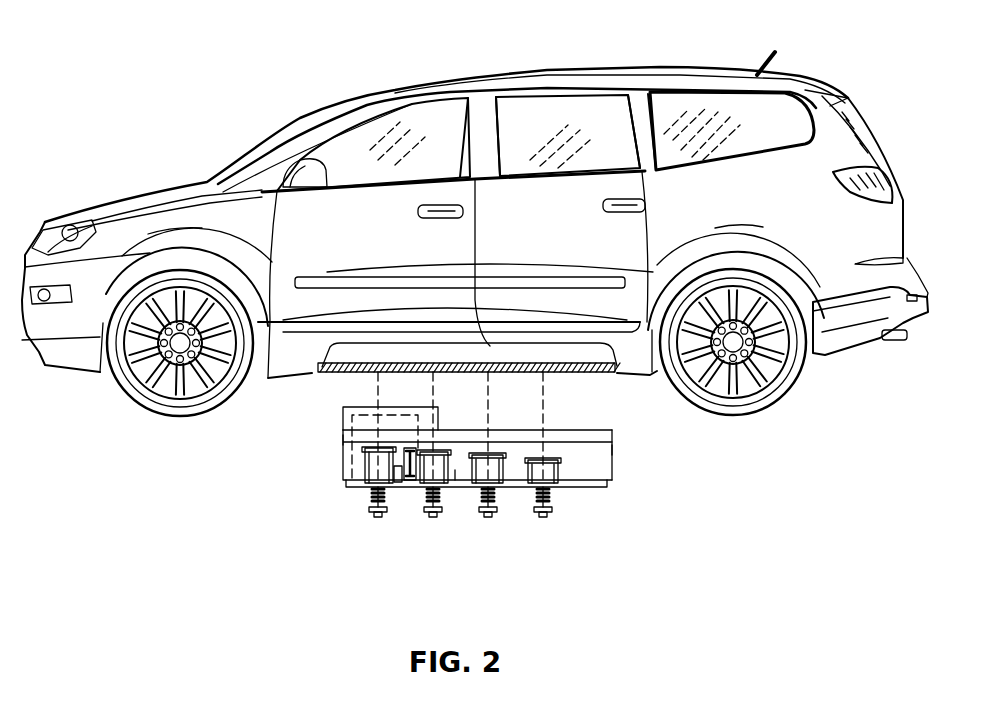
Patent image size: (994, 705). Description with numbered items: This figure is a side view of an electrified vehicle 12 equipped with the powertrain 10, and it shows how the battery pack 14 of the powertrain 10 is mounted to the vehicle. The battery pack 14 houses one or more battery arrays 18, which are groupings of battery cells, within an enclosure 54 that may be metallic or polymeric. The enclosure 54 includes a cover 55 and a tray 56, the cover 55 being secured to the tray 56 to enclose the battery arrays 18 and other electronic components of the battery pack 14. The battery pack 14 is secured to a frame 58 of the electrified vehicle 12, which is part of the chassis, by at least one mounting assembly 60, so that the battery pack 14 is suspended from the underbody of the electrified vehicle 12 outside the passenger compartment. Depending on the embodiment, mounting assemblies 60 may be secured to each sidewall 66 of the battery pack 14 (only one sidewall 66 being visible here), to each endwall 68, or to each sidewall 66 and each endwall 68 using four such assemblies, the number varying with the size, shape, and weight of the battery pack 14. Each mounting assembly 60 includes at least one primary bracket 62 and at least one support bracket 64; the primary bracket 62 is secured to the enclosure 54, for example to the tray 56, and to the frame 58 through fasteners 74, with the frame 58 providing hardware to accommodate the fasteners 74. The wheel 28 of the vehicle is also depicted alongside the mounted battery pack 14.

The powertrain 10 is at (480, 494).
The electrified vehicle 12 is at (475, 226).
The battery pack 14 is at (501, 498).
The battery arrays 18 is at (421, 445).
The wheel 28 is at (763, 409).
The enclosure 54 is at (542, 436).
The cover 55 is at (618, 428).
The tray 56 is at (615, 456).
The frame 58 is at (505, 362).
The mounting assembly 60 is at (352, 493).
The primary bracket 62 is at (372, 445).
The support bracket 64 is at (398, 482).
The sidewall 66 is at (455, 470).
The endwall 68 is at (336, 439).
The fasteners 74 is at (377, 518).